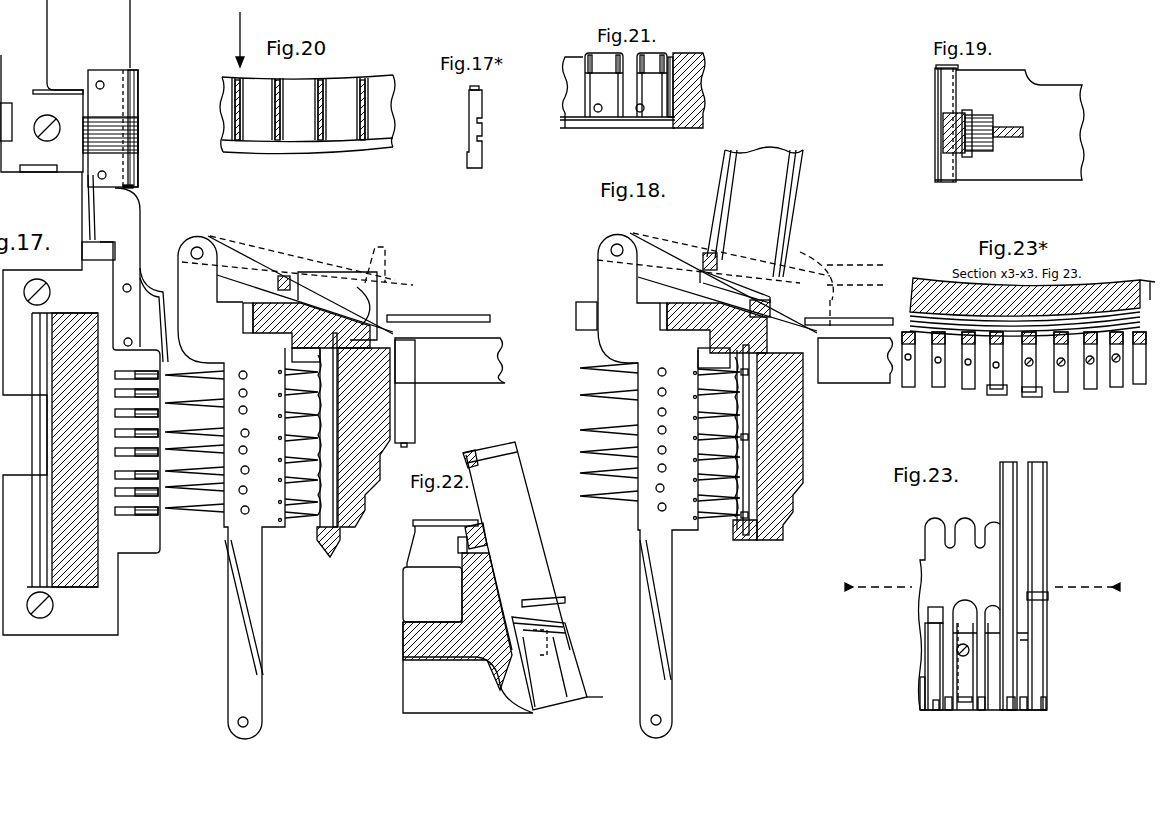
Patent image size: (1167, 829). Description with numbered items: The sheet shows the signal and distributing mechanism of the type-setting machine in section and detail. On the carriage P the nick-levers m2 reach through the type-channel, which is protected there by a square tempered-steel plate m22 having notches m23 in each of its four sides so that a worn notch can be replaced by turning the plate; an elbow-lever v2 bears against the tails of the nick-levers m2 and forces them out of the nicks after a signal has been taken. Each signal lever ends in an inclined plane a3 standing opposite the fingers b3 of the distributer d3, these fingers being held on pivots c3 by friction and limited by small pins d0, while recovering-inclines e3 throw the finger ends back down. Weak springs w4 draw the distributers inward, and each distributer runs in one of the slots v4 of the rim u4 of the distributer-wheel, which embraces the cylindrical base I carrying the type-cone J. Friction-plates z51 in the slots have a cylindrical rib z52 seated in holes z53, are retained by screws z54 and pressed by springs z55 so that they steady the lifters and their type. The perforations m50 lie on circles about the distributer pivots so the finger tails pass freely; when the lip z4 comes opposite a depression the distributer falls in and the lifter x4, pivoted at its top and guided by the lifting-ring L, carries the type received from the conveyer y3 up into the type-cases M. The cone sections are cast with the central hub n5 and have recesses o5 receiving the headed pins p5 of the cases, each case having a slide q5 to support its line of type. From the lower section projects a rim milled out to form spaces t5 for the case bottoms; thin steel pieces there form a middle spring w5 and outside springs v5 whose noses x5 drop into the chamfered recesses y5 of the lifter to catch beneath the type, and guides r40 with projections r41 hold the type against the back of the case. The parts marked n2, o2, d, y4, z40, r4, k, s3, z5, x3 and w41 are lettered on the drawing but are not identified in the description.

In FIG. 17, the notches m23 is at (41, 123).
In FIG. 17, the tempered-steel plate m22 is at (54, 121).
In FIG. 17, the nick-levers m2 is at (133, 136).
In FIG. 19, the nick-levers m2 is at (943, 128).
In FIG. 17, the plate n2 is at (134, 192).
In FIG. 19, the plate n2 is at (946, 117).
In FIG. 17, the spring arm o2 is at (160, 316).
In FIG. 17, the carriage P is at (81, 403).
In FIG. 17, the inclined plane a3 is at (136, 444).
In FIG. 17, the fingers b3 is at (194, 442).
In FIG. 18, the fingers b3 is at (609, 428).
In FIG. 17, the pivots c3 is at (249, 442).
In FIG. 18, the pivots c3 is at (667, 439).
In FIG. 17, the lever d is at (231, 488).
In FIG. 17, the small pins d0 is at (275, 446).
In FIG. 18, the small pins d0 is at (690, 446).
In FIG. 17, the recovering-inclines e3 is at (252, 408).
In FIG. 18, the recovering-inclines e3 is at (673, 363).
In FIG. 17, the lifter x4 is at (297, 285).
In FIG. 18, the lifter x4 is at (742, 283).
In FIG. 17, the conveyer y3 is at (275, 283).
In FIG. 18, the conveyer y3 is at (731, 286).
In FIG. 17, the slots v4 is at (337, 306).
In FIG. 21, the slots v4 is at (622, 55).
In FIG. 17, the spring seat y4 is at (306, 437).
In FIG. 18, the spring seat y4 is at (718, 439).
In FIG. 17, the lip z4 is at (306, 325).
In FIG. 18, the lip z4 is at (716, 315).
In FIG. 17, the cylindrical base I is at (353, 452).
In FIG. 18, the cylindrical base I is at (768, 446).
In FIG. 17, the lifting-ring L is at (450, 392).
In FIG. 18, the lifting-ring L is at (855, 360).
In FIG. 17, the bar z40 is at (438, 324).
In FIG. 17, the nose x5 is at (457, 328).
In FIG. 17, the ribs r4 is at (351, 288).
In FIG. 20, the ribs r4 is at (281, 86).
In FIG. 17, the weak springs w4 is at (244, 607).
In FIG. 18, the weak springs w4 is at (655, 610).
In FIG. 20, the rim u4 is at (307, 114).
In FIG. 21, the rim u4 is at (626, 85).
In FIG. 20, the friction-plates z51 is at (365, 152).
In FIG. 21, the friction-plates z51 is at (604, 57).
In FIG. 21, the cylindrical rib z52 is at (596, 112).
In FIG. 21, the holes z53 is at (641, 112).
In FIG. 21, the screws z54 is at (714, 106).
In FIG. 21, the springs z55 is at (690, 90).
In FIG. 19, the elbow-lever v2 is at (1008, 124).
In FIG. 18, the distributer d3 is at (637, 487).
In FIG. 18, the middle section spring w5 is at (755, 212).
In FIG. 18, the outside section springs v5 is at (753, 264).
In FIG. 22, the outside section springs v5 is at (515, 675).
In FIG. 18, the chamfered recesses y5 is at (743, 282).
In FIG. 18, the spaces t5 is at (849, 328).
In FIG. 18, the spring k is at (723, 401).
In FIG. 18, the perforations m50 is at (748, 373).
In FIG. 22, the type-cases M is at (516, 546).
In FIG. 23, the type-cases M is at (1022, 586).
In FIG. 22, the type-cone J is at (468, 616).
In FIG. 22, the central hub n5 is at (474, 683).
In FIG. 23, the central hub n5 is at (936, 560).
In FIG. 22, the recesses o5 is at (476, 535).
In FIG. 23, the recesses o5 is at (965, 522).
In FIG. 22, the pins p5 is at (456, 545).
In FIG. 22, the housing s3 is at (557, 663).
In FIG. 22, the slide q5 is at (553, 601).
In FIG. 23, the slide q5 is at (1045, 599).
In FIG. 22, the band z5 is at (517, 662).
In FIG. 22, the projections r41 is at (595, 687).
In FIG. 22, the guides r40 is at (615, 702).
In FIG. 23, the guides r40 is at (1015, 398).
In FIG. 22, the section line x3 is at (561, 715).
In FIG. 23, the section line x3 is at (987, 648).
In FIG. 22, the pin w41 is at (552, 681).
In FIG. 23, the pin w41 is at (947, 609).